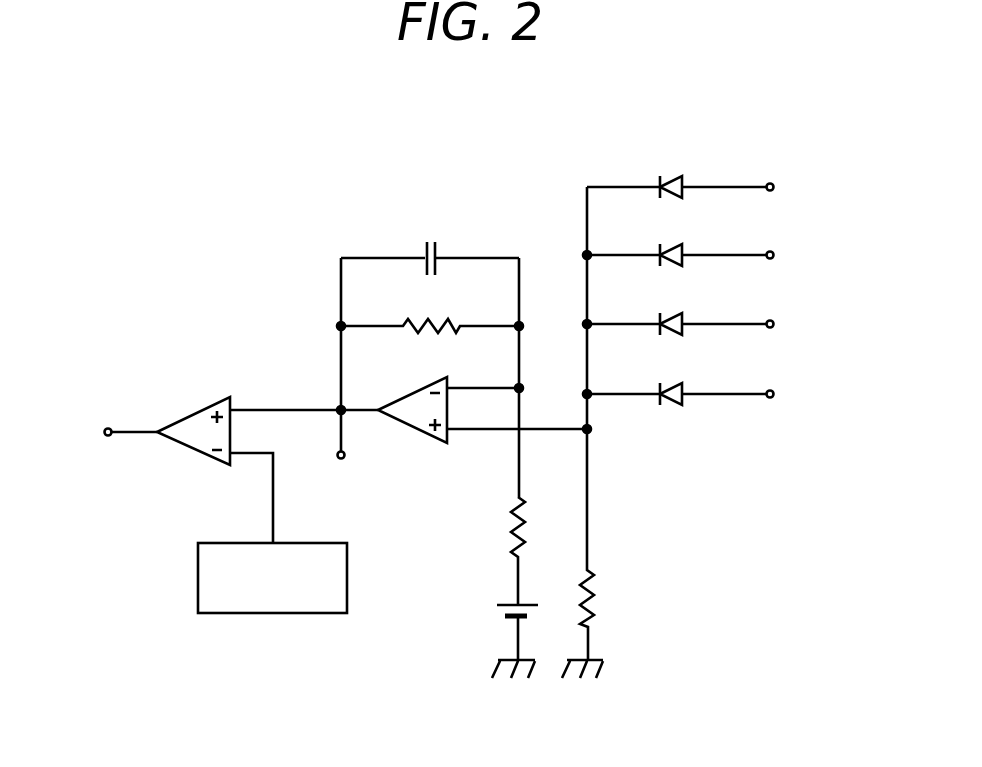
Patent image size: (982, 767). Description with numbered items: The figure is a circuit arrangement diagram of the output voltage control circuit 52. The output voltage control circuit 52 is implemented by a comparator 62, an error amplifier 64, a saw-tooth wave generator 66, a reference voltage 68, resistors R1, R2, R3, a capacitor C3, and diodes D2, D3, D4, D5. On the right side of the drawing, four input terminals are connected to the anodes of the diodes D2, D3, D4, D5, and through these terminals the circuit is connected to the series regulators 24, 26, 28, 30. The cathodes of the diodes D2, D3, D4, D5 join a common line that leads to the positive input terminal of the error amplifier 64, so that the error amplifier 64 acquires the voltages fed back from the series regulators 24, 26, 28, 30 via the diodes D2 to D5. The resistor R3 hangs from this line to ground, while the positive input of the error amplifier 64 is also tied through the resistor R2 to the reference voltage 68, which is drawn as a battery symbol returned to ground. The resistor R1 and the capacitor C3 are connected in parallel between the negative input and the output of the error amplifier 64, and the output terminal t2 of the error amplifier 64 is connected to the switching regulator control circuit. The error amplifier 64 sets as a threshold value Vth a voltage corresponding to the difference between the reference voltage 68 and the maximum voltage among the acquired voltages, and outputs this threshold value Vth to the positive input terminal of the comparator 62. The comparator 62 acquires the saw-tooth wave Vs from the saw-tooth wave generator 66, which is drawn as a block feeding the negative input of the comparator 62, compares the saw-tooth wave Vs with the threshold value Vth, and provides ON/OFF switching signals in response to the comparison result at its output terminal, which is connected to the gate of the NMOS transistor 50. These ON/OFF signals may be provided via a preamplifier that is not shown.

The output voltage control circuit 52 is at (163, 279).
The comparator 62 is at (193, 414).
The error amplifier 64 is at (408, 428).
The saw-tooth wave generator 66 is at (247, 613).
The reference voltage 68 is at (497, 607).
The NMOS transistor 50 is at (108, 495).
The series regulator 24 is at (774, 187).
The series regulator 26 is at (774, 255).
The series regulator 28 is at (774, 324).
The series regulator 30 is at (774, 394).
The output terminal t2 is at (340, 460).
The threshold value Vth is at (268, 410).
The saw-tooth wave Vs is at (273, 488).
The capacitor C3 is at (430, 239).
The resistor R1 is at (430, 307).
The resistor R2 is at (496, 551).
The resistor R3 is at (599, 553).
The diode D2 is at (670, 177).
The diode D3 is at (670, 245).
The diode D4 is at (670, 314).
The diode D5 is at (670, 384).